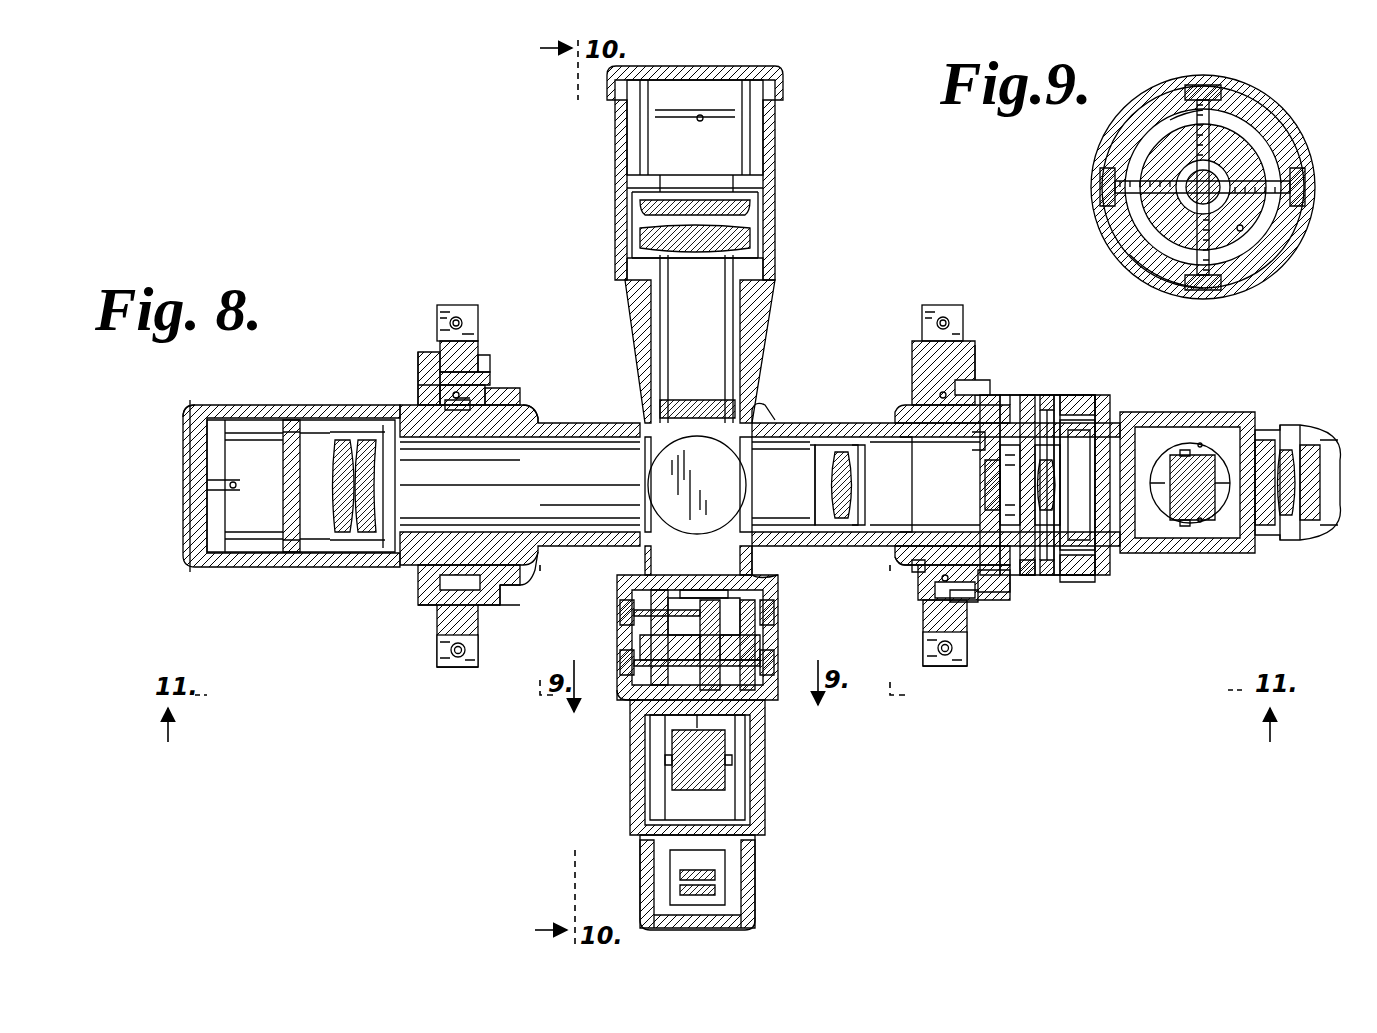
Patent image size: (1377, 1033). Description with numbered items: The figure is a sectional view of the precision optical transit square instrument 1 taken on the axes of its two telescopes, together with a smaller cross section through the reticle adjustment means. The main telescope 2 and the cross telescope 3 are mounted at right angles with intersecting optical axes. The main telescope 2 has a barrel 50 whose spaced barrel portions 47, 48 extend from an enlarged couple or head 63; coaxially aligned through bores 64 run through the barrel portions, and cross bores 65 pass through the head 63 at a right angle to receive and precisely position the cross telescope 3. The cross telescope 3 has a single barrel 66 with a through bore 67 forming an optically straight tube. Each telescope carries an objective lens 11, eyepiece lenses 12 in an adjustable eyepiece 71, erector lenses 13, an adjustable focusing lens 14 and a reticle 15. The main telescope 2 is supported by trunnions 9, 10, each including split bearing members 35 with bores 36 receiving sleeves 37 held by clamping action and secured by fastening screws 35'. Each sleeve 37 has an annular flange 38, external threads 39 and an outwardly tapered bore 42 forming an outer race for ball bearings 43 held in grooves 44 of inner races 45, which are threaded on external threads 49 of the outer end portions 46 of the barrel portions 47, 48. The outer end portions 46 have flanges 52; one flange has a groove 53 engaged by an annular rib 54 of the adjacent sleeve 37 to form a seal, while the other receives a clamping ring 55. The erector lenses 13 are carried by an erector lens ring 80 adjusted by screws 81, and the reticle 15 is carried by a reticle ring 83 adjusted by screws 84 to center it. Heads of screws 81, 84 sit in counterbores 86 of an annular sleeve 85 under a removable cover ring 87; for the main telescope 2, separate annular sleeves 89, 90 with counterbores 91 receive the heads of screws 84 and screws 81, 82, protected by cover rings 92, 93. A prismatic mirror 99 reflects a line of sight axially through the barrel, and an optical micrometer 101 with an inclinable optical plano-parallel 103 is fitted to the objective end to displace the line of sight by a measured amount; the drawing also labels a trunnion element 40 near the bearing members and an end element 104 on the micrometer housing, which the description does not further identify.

In FIG. 8, the precision optical transit square instrument 1 is at (385, 660).
In FIG. 8, the main telescope 2 is at (800, 425).
In FIG. 8, the cross telescope 3 is at (760, 320).
In FIG. 9, the cross telescope 3 is at (1314, 218).
In FIG. 8, the trunnion 9 is at (455, 668).
In FIG. 8, the trunnion 10 is at (958, 668).
In FIG. 8, the objective lens 11 is at (345, 540).
In FIG. 8, the eyepiece lens 12 is at (1320, 515).
In FIG. 8, the erector lens 13 is at (745, 630).
In FIG. 9, the erector lens 13 is at (1212, 172).
In FIG. 8, the adjustable focusing lens 14 is at (712, 395).
In FIG. 8, the reticle 15 is at (720, 600).
In FIG. 8, the split bearing member 35 is at (703, 323).
In FIG. 8, the split bearing member fastening screw 35' is at (731, 465).
In FIG. 8, the bore 36 is at (478, 372).
In FIG. 8, the sleeve 37 is at (482, 385).
In FIG. 8, the annular flange 38 is at (470, 360).
In FIG. 8, the external threads 39 is at (420, 382).
In FIG. 8, the clamp flange 40 is at (418, 397).
In FIG. 8, the outwardly tapered bore 42 is at (462, 440).
In FIG. 8, the ball bearing 43 is at (493, 390).
In FIG. 8, the groove 44 is at (915, 418).
In FIG. 8, the inner race 45 is at (455, 565).
In FIG. 8, the outer end portion 46 is at (447, 440).
In FIG. 8, the barrel portion 47 is at (585, 556).
In FIG. 8, the barrel portion 48 is at (830, 540).
In FIG. 8, the external threads 49 is at (433, 437).
In FIG. 8, the barrel 50 is at (568, 423).
In FIG. 8, the flange 52 is at (514, 575).
In FIG. 8, the groove 53 is at (918, 590).
In FIG. 8, the annular rib 54 is at (915, 560).
In FIG. 8, the clamping ring 55 is at (488, 600).
In FIG. 8, the couple or head 63 is at (772, 412).
In FIG. 8, the through bore 64 is at (548, 528).
In FIG. 8, the cross bore 65 is at (630, 452).
In FIG. 8, the barrel 66 is at (768, 545).
In FIG. 9, the barrel 66 is at (1148, 130).
In FIG. 8, the through bore 67 is at (660, 580).
In FIG. 9, the through bore 67 is at (1245, 230).
In FIG. 8, the adjustable eyepiece 71 is at (1322, 440).
In FIG. 8, the erector lens ring 80 is at (630, 693).
In FIG. 9, the erector lens ring 80 is at (1248, 145).
In FIG. 8, the screw 81 is at (776, 680).
In FIG. 9, the screw 81 is at (1210, 290).
In FIG. 8, the screw 82 is at (620, 650).
In FIG. 8, the reticle ring 83 is at (658, 605).
In FIG. 8, the screw 84 is at (620, 612).
In FIG. 8, the annular sleeve 85 is at (762, 648).
In FIG. 9, the annular sleeve 85 is at (1296, 150).
In FIG. 8, the counterbore 86 is at (776, 660).
In FIG. 9, the counterbore 86 is at (1102, 183).
In FIG. 8, the cover ring 87 is at (625, 700).
In FIG. 9, the cover ring 87 is at (1120, 255).
In FIG. 8, the annular sleeve 89 is at (990, 560).
In FIG. 8, the annular sleeve 90 is at (1090, 398).
In FIG. 8, the counterbore 91 is at (1030, 595).
In FIG. 8, the cover ring 92 is at (1010, 392).
In FIG. 8, the cover ring 93 is at (1075, 598).
In FIG. 8, the prismatic mirror 99 is at (1185, 505).
In FIG. 8, the optical micrometer 101 is at (262, 567).
In FIG. 8, the optical plano-parallel 103 is at (218, 480).
In FIG. 8, the end cap 104 is at (205, 567).